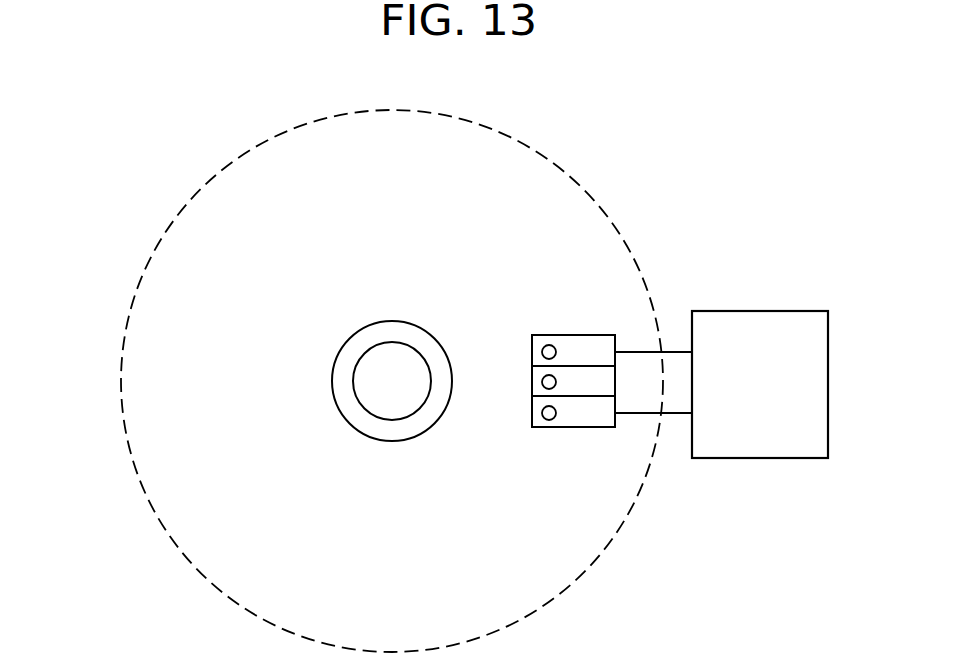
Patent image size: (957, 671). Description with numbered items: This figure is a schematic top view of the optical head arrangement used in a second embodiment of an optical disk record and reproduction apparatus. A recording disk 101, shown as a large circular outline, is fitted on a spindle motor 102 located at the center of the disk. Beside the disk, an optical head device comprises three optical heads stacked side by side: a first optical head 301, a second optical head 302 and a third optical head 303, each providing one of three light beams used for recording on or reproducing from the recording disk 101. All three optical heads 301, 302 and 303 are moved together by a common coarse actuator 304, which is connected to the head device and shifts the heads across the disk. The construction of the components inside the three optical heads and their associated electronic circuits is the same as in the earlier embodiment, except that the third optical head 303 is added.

The recording disk 101 is at (588, 184).
The spindle motor 102 is at (432, 338).
The first optical head 301 is at (577, 335).
The second optical head 302 is at (532, 375).
The third optical head 303 is at (575, 427).
The coarse actuator 304 is at (756, 311).